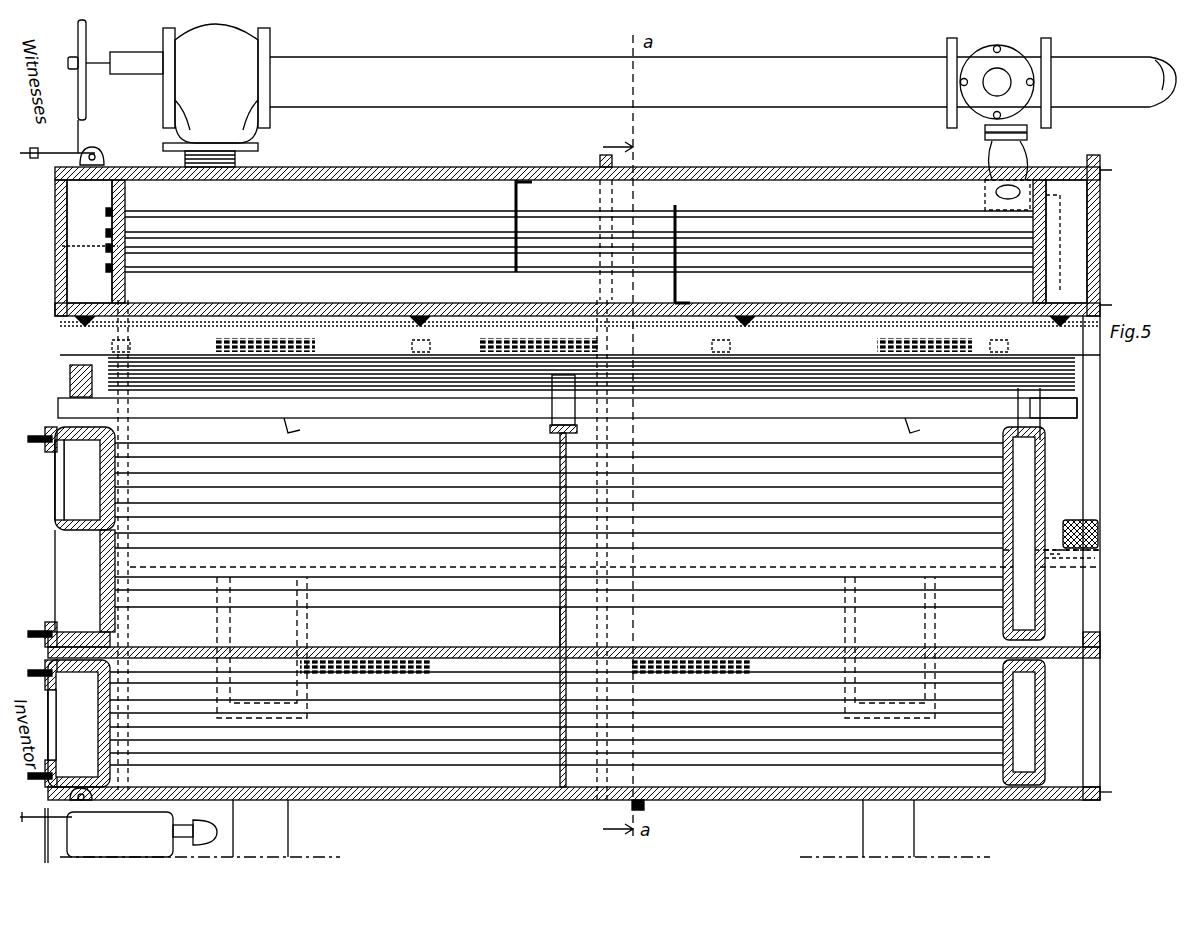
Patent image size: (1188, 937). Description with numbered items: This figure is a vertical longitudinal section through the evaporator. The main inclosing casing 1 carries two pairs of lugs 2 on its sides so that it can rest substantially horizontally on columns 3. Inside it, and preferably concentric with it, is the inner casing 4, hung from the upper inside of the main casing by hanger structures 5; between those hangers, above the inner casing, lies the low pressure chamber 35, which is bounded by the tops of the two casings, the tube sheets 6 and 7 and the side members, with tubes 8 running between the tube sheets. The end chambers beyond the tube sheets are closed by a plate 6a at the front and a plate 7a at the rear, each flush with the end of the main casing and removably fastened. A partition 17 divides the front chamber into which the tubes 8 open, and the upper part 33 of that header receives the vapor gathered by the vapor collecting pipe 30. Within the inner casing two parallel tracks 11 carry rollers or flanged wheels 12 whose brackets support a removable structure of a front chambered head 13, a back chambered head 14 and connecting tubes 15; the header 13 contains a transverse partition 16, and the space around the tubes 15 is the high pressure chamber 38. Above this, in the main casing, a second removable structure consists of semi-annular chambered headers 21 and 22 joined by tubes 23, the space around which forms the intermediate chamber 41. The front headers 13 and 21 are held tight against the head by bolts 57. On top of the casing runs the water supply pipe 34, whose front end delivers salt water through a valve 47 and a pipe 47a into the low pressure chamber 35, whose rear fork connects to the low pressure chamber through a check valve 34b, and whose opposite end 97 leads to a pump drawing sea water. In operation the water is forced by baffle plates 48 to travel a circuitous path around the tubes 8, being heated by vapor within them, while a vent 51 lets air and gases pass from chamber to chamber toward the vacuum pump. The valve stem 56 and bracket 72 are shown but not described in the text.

The main inclosing casing 1 is at (725, 170).
The lugs 2 is at (310, 630).
The columns 3 is at (270, 817).
The inner casing 4 is at (825, 312).
The hanger structures 5 is at (125, 288).
The tube sheet 6 is at (110, 196).
The plate 6a is at (57, 265).
The tube sheet 7 is at (1050, 200).
The plate 7a is at (1100, 268).
The tubes 8 is at (458, 212).
The tracks 11 is at (608, 429).
The rollers or flanged wheels 12 is at (70, 392).
The front chambered head 13 is at (85, 440).
The back chambered head 14 is at (1018, 500).
The tubes 15 is at (440, 455).
The partition 16 is at (75, 532).
The partition 17 is at (85, 250).
The semi-annular chambered header 21 is at (97, 720).
The semi-annular chambered header 22 is at (1012, 726).
The tubes 23 is at (400, 755).
The vapor collecting pipe 30 is at (62, 342).
The upper part of header 33 is at (94, 240).
The water supply pipe 34 is at (710, 83).
The check valve 34b is at (990, 152).
The low pressure chamber 35 is at (565, 170).
The high pressure chamber 38 is at (632, 627).
The intermediate chamber 41 is at (676, 784).
The valve 47 is at (169, 81).
The pipe 47a is at (255, 150).
The baffle plates 48 is at (519, 195).
The vent 51 is at (1016, 408).
The valve stem 56 is at (40, 810).
The bolts 57 is at (40, 445).
The bracket 72 is at (1053, 414).
The opposite end of water supply pipe 97 is at (1139, 82).